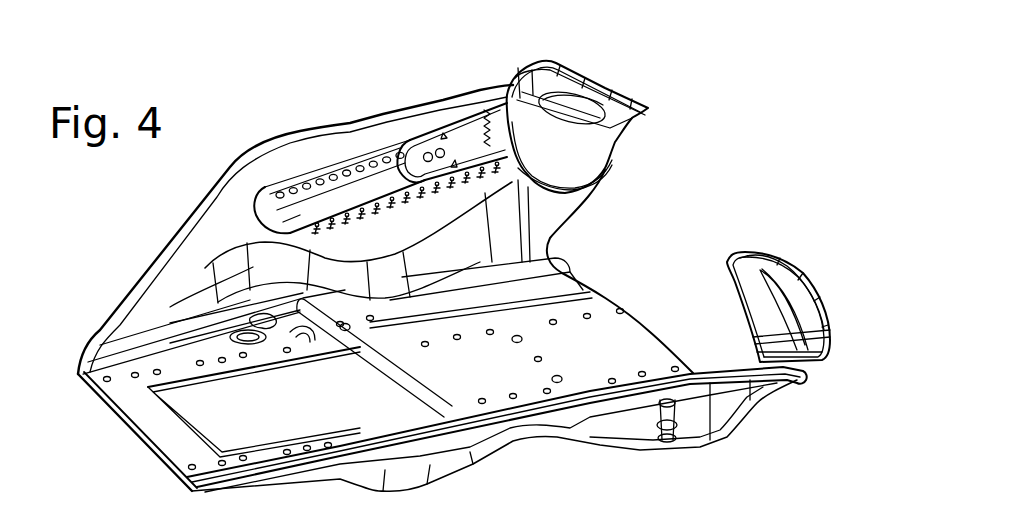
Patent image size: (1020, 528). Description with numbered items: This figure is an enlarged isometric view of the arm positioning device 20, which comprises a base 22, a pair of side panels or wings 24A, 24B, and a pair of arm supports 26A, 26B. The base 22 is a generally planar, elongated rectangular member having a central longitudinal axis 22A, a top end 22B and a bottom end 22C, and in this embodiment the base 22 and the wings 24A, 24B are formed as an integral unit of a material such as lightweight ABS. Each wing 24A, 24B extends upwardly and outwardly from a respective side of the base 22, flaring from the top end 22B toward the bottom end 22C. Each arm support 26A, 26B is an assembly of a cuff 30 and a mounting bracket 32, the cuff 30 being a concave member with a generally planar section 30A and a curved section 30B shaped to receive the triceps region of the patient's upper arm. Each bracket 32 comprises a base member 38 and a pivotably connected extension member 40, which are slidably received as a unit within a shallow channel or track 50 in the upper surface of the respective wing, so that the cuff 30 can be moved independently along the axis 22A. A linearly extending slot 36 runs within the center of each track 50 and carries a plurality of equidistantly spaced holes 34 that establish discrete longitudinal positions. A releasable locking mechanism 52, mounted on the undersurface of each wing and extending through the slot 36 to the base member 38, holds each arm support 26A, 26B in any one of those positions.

The arm positioning device 20 is at (702, 165).
The base 22 is at (177, 358).
The central longitudinal axis 22A is at (213, 415).
The top end 22B is at (152, 452).
The bottom end 22C is at (588, 337).
The wing 24A is at (435, 100).
The wing 24B is at (450, 457).
The arm support 26A is at (613, 88).
The arm support 26B is at (802, 278).
The cuff 30 is at (648, 105).
The generally planar section 30A is at (565, 172).
The curved section 30B is at (557, 87).
The mounting bracket 32 is at (478, 104).
The holes 34 is at (317, 177).
The slot 36 is at (274, 205).
The base member 38 is at (465, 140).
The extension member 40 is at (503, 118).
The channel or track 50 is at (287, 223).
The releasable locking mechanism 52 is at (665, 435).